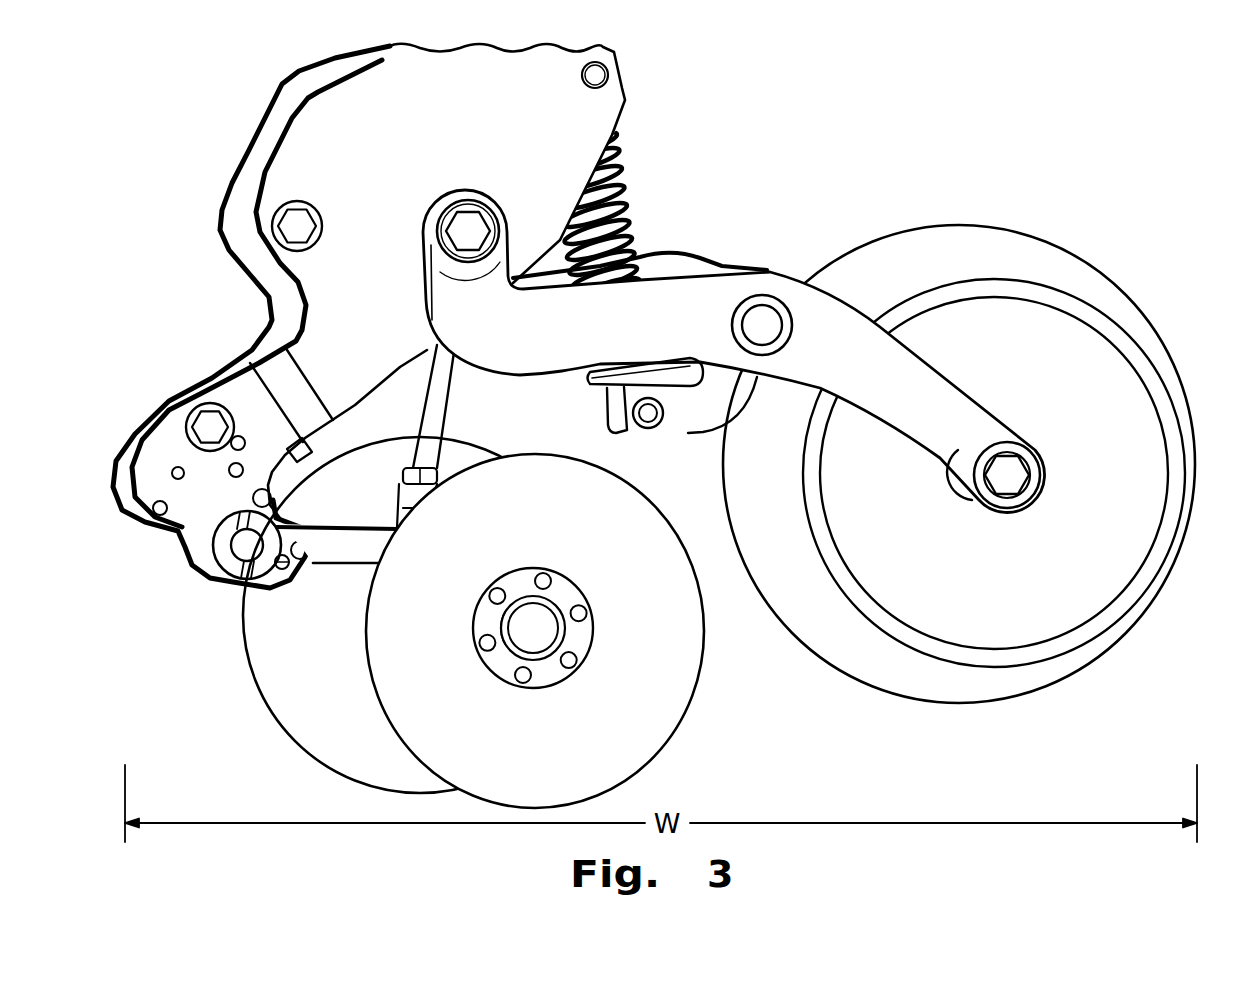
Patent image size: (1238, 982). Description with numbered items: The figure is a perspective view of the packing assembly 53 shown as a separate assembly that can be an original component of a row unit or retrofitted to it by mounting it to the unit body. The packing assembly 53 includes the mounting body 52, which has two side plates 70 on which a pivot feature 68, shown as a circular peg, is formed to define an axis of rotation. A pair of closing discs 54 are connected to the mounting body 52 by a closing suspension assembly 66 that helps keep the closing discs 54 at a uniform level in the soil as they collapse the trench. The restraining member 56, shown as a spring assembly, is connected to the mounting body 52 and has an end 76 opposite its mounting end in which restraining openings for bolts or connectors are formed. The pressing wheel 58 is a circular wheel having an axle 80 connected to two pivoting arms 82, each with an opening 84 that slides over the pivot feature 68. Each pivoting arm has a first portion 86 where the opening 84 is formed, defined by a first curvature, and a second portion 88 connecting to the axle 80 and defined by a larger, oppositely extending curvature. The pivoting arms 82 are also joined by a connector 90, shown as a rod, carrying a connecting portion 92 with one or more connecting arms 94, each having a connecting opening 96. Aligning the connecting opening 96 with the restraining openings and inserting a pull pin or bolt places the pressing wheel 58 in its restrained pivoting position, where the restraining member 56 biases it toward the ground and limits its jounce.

The mounting body 52 is at (312, 153).
The packing assembly 53 is at (654, 426).
The closing discs 54 is at (280, 712).
The restraining member 56 is at (630, 196).
The pressing wheel 58 is at (1055, 667).
The closing suspension assembly 66 is at (226, 600).
The pivot feature 68 is at (473, 226).
The side plates 70 is at (243, 189).
The end 76 is at (612, 392).
The axle 80 is at (1013, 477).
The pivoting arms 82 is at (693, 351).
The opening 84 is at (457, 260).
The first portion 86 is at (427, 247).
The second portion 88 is at (945, 437).
The connector 90 is at (765, 315).
The connecting portion 92 is at (668, 365).
The connecting arms 94 is at (683, 368).
The connecting opening 96 is at (652, 428).